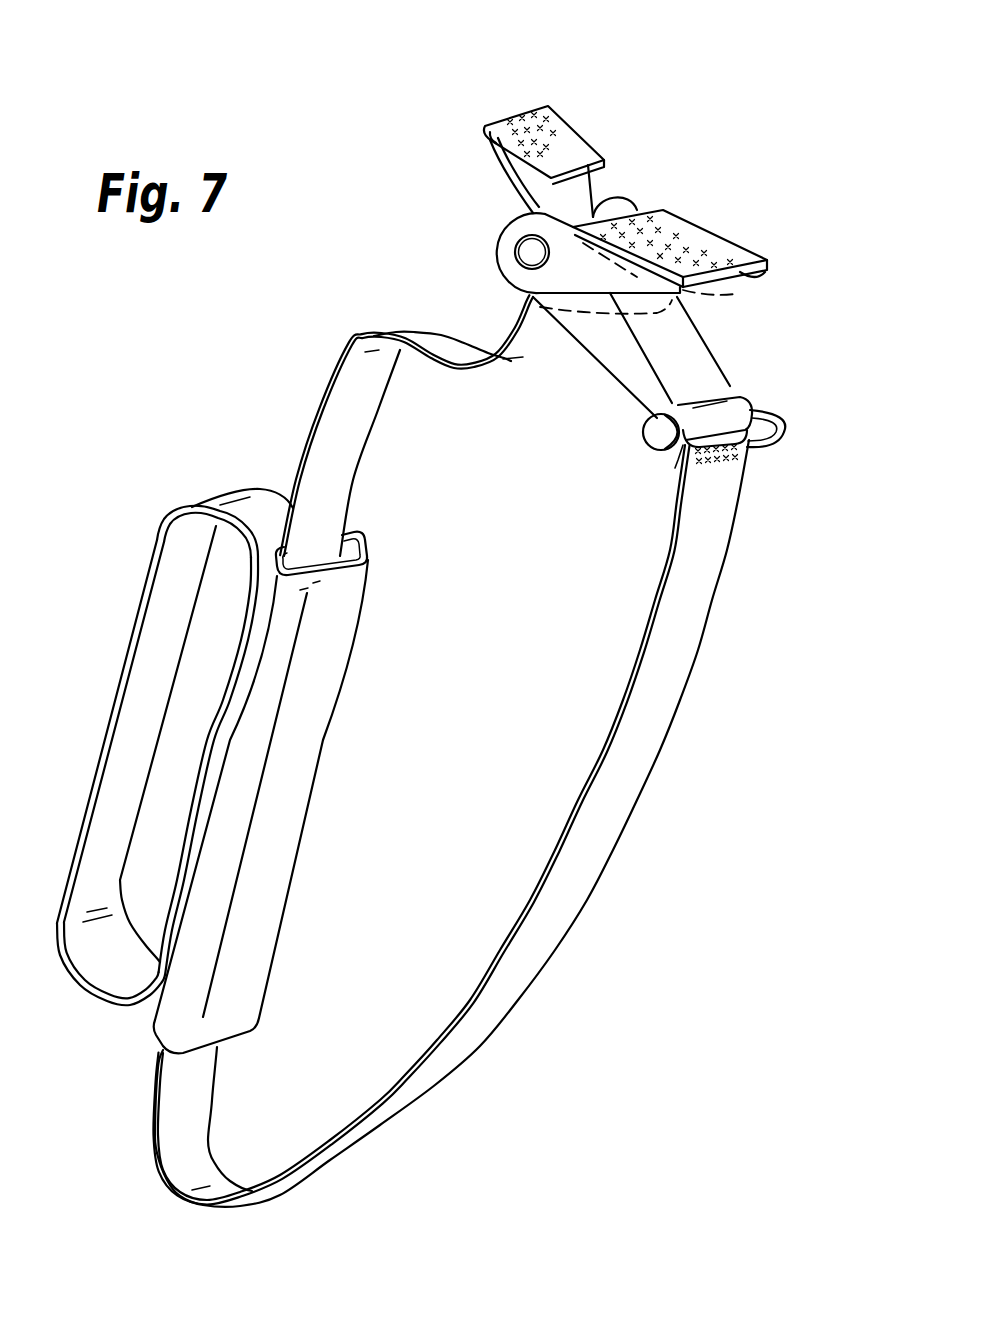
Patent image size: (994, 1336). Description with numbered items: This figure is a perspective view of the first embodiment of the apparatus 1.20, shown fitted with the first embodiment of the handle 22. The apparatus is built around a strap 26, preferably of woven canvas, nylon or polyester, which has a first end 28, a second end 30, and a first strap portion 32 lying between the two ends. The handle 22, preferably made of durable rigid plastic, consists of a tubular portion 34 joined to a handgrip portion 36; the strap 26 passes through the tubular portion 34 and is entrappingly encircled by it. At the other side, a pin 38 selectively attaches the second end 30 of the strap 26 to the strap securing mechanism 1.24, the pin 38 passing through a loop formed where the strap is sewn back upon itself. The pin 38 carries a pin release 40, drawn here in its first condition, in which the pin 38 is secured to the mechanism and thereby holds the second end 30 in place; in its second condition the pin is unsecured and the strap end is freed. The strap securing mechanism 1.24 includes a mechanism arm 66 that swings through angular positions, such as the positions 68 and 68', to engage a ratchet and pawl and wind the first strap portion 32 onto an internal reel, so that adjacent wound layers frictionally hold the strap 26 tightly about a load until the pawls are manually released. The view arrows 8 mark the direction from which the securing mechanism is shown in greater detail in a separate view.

The section line 8- 8 is at (470, 63).
The first embodiment of the apparatus 1.20 is at (366, 304).
The strap securing mechanism 1.24 is at (742, 332).
The first handle embodiment 22 is at (371, 689).
The strap 26 is at (607, 822).
The first end 28 is at (530, 105).
The second end 30 is at (711, 400).
The first strap portion 32 is at (541, 337).
The tubular portion 34 is at (289, 794).
The handgrip portion 36 is at (116, 700).
The pin 38 is at (655, 444).
The pin release 40 is at (773, 408).
The mechanism arm 66 is at (673, 216).
The angular position 68 is at (686, 211).
The angular position 68' is at (762, 274).